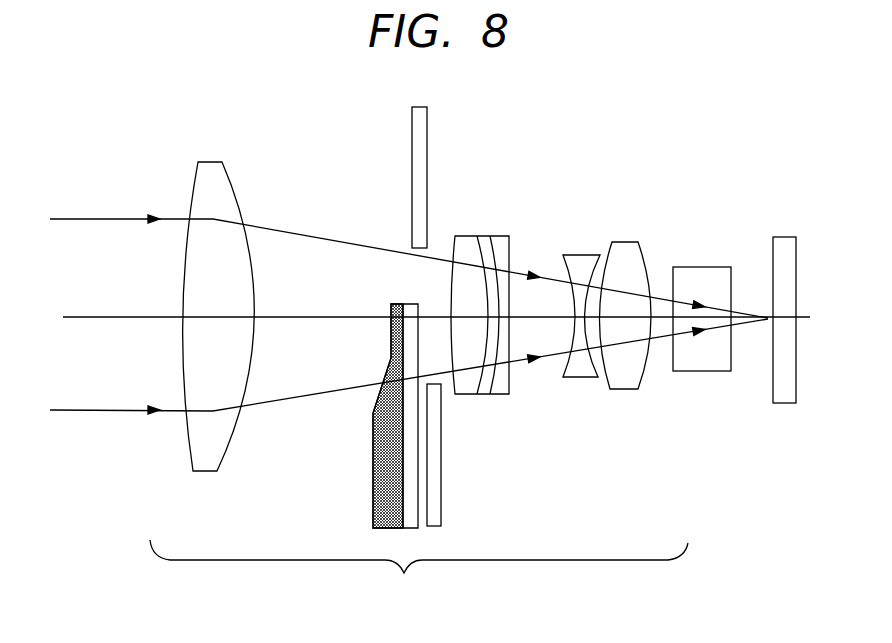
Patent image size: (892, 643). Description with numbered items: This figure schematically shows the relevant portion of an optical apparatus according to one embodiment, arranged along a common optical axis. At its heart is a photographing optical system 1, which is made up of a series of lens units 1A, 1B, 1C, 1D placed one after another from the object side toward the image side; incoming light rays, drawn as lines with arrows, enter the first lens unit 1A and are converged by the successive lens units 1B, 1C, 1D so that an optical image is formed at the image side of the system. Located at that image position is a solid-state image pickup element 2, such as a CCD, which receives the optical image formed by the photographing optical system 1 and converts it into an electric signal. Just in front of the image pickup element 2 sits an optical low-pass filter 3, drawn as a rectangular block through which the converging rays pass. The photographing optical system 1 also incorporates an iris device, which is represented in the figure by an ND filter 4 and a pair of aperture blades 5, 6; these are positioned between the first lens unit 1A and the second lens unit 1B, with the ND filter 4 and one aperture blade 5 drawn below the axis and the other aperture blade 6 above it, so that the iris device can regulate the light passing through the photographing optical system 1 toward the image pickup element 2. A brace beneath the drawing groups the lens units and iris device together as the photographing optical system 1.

The photographing optical system 1 is at (419, 573).
The lens unit 1A is at (207, 464).
The lens unit 1B is at (465, 388).
The lens unit 1C is at (580, 371).
The lens unit 1D is at (626, 383).
The solid-state image pickup element 2 is at (783, 392).
The optical low-pass filter 3 is at (702, 362).
The ND filter 4 is at (382, 451).
The aperture blade 5 is at (434, 478).
The aperture blade 6 is at (418, 138).